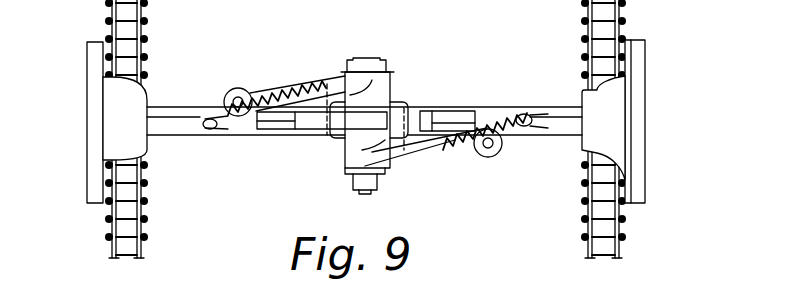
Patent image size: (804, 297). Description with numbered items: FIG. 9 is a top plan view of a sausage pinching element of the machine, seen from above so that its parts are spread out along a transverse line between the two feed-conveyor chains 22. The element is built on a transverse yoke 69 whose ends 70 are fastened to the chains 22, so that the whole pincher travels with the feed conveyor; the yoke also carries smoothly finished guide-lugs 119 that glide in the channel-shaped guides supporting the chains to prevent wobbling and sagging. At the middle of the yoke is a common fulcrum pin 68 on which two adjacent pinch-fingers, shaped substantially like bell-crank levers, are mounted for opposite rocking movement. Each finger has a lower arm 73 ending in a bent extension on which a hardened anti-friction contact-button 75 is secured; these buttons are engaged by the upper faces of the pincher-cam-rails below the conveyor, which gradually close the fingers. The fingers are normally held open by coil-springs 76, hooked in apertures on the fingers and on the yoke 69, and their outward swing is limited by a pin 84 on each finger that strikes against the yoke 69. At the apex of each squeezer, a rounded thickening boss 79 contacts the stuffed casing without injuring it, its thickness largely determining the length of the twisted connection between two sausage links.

The chains 22 is at (143, 220).
The fulcrum pin 68 is at (362, 58).
The transverse yoke 69 is at (241, 140).
The ends 70 is at (148, 95).
The lower arm 73 is at (287, 85).
The contact-buttons 75 is at (492, 157).
The coil-springs 76 is at (278, 93).
The thickening boss 79 is at (298, 133).
The pin 84 is at (327, 137).
The guide-lugs 119 is at (95, 108).